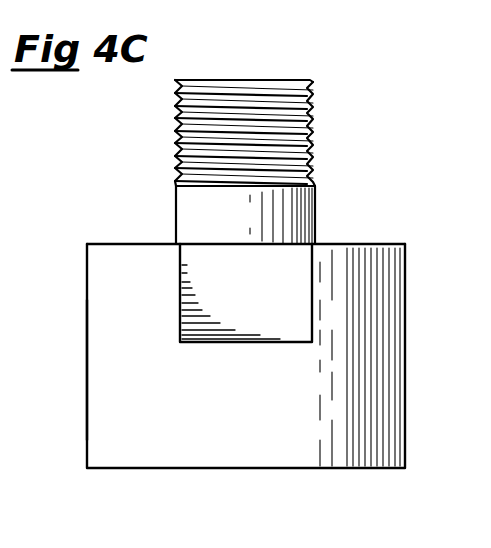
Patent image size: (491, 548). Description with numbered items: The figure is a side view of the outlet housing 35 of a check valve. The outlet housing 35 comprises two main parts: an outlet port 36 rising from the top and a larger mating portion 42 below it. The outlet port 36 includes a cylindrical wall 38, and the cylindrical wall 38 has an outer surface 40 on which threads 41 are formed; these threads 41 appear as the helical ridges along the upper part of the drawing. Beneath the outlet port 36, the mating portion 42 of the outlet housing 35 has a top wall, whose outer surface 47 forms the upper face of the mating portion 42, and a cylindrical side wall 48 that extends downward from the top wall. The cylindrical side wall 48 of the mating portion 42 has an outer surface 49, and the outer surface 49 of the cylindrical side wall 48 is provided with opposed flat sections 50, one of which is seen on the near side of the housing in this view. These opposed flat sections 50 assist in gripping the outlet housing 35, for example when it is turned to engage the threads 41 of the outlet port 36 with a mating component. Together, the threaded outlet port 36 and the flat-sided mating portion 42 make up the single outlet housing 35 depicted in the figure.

The outlet housing 35 is at (375, 181).
The outlet port 36 is at (176, 190).
The cylindrical wall 38 is at (300, 216).
The outer surface 40 is at (318, 192).
The threads 41 is at (313, 120).
The mating portion 42 is at (87, 297).
The outer surface 47 is at (100, 243).
The cylindrical side wall 48 is at (390, 336).
The outer surface 49 is at (87, 373).
The opposed flat sections 50 is at (212, 262).